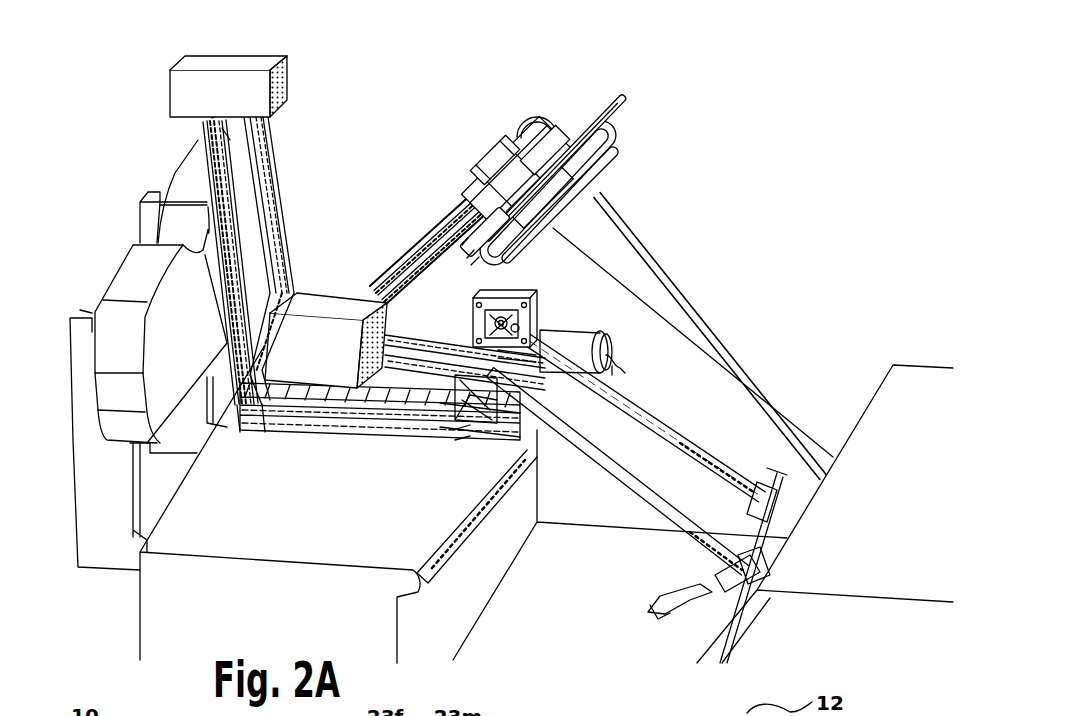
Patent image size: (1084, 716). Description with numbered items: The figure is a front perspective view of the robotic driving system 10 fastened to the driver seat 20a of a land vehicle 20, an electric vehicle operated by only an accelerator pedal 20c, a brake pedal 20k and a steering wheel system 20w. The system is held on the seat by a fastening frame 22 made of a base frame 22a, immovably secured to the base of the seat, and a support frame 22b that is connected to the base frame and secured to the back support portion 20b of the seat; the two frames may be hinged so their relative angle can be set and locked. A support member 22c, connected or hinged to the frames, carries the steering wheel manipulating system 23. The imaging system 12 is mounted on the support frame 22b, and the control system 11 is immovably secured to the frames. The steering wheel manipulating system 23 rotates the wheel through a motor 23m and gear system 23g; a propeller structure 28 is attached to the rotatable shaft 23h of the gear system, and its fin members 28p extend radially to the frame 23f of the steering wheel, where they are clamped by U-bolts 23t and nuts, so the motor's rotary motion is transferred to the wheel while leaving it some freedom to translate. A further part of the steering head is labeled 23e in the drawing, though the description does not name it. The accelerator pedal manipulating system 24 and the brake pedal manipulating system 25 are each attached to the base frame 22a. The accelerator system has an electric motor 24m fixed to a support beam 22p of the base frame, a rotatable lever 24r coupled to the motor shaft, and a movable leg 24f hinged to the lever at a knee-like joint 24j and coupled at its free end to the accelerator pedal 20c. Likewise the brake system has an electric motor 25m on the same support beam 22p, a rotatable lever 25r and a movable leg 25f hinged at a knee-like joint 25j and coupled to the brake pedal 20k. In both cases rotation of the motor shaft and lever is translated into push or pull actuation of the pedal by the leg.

The robotic driving system 10 is at (322, 52).
The control system 11 is at (320, 313).
The imaging system 12 is at (220, 56).
The land vehicle 20 is at (825, 514).
The driver seat 20a is at (343, 427).
The back support portion 20b is at (173, 173).
The accelerator pedal 20c is at (673, 593).
The brake pedal 20k is at (768, 478).
The steering wheel system 20w is at (625, 200).
The fastening frame 22 is at (316, 213).
The base frame 22a is at (297, 427).
The support frame 22b is at (280, 173).
The support member 22c is at (417, 240).
The support beam 22p is at (565, 395).
The steering wheel manipulating system 23 is at (438, 82).
The bearing 23e is at (530, 115).
The frame of the steering wheel 23f is at (617, 143).
The gear system 23g is at (470, 172).
The rotatable shaft 23h is at (485, 148).
The motor 23m is at (593, 120).
The U-bolts 23t is at (575, 215).
The accelerator pedal manipulating system 24 is at (560, 492).
The movable leg 24f is at (600, 467).
The knee-like joint 24j is at (533, 427).
The electric motor 24m is at (450, 407).
The rotatable lever 24r is at (475, 395).
The brake pedal manipulating system 25 is at (625, 313).
The movable leg 25f is at (650, 395).
The knee-like joint 25j is at (527, 307).
The electric motor 25m is at (472, 312).
The rotatable lever 25r is at (504, 317).
The propeller structure 28 is at (593, 90).
The fin members 28p is at (620, 107).